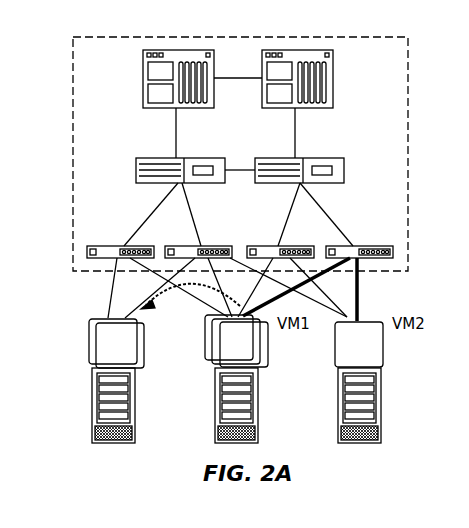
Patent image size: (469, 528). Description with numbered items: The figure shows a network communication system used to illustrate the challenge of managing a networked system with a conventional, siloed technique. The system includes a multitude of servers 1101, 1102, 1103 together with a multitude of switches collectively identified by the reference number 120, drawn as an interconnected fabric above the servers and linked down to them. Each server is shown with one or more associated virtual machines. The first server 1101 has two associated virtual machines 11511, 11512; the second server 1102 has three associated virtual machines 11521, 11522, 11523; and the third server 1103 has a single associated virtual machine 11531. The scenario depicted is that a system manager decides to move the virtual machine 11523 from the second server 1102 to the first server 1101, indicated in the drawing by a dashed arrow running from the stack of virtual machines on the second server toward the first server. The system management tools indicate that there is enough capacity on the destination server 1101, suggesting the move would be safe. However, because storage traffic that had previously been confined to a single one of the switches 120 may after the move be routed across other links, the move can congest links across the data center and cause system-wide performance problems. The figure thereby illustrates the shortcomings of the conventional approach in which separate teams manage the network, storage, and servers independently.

The switches 120 is at (242, 36).
The virtual machine 11511 is at (100, 352).
The virtual machine 11512 is at (92, 330).
The virtual machine 11521 is at (214, 354).
The virtual machine 11522 is at (212, 342).
The virtual machine 11523 is at (205, 329).
The virtual machine 11531 is at (384, 346).
The server 1101 is at (92, 401).
The server 1102 is at (215, 401).
The server 1103 is at (338, 401).